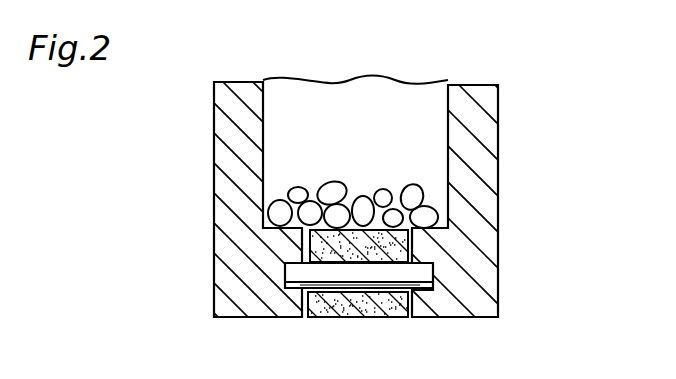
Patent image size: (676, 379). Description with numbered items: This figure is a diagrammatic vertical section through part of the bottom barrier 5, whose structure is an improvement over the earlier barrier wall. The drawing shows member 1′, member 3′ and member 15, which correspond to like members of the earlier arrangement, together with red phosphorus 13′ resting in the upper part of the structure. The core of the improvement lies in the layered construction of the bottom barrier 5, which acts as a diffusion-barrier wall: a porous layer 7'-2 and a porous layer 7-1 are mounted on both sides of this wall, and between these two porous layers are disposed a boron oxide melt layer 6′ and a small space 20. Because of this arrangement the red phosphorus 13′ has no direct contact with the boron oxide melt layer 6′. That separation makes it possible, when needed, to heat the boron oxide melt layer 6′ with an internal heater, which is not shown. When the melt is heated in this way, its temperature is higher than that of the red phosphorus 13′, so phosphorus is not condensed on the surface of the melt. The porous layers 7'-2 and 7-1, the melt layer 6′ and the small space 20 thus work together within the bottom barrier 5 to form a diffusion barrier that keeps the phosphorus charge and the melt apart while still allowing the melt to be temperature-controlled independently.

The member 1′ is at (364, 103).
The member 3′ is at (448, 109).
The red phosphorus 13′ is at (440, 210).
The porous layer 7'-2 is at (361, 200).
The small space 20 is at (298, 272).
The B2O3 melt layer 6′ is at (425, 288).
The porous layer 7-1 is at (380, 318).
The member 15 is at (302, 317).
The bottom barrier 5 is at (320, 318).